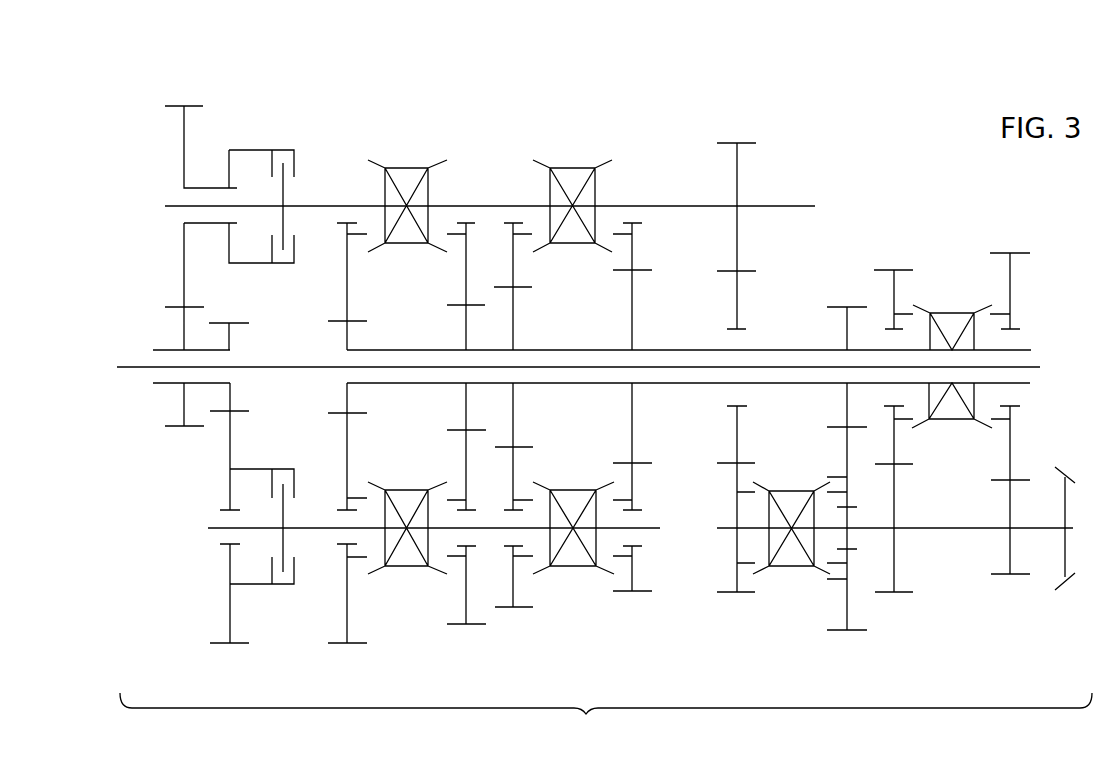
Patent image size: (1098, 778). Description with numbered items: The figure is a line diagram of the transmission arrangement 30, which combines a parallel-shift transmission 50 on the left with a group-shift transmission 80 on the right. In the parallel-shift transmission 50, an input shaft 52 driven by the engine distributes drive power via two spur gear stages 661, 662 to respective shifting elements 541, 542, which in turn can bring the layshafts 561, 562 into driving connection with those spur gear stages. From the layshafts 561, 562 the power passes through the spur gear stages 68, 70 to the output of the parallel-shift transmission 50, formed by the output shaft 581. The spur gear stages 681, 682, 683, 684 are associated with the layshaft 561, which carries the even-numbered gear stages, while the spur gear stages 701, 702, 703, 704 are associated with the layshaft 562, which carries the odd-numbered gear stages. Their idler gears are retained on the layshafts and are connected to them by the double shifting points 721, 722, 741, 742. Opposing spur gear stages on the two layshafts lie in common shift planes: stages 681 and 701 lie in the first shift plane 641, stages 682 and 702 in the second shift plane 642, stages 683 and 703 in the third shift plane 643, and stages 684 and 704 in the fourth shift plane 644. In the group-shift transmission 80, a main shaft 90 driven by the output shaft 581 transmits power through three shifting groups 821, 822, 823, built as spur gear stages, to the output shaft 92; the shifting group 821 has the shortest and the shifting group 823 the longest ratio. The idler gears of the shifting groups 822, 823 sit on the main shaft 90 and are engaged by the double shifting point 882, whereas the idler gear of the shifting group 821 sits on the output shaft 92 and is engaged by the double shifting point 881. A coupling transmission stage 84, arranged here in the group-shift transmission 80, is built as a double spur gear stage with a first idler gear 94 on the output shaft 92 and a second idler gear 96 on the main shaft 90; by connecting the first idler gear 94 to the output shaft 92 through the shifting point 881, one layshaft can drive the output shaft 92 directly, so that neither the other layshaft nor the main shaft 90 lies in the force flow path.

The transmission arrangement 30 is at (606, 720).
The parallel-shift transmission 50 is at (405, 57).
The input shaft 52 is at (153, 350).
The shifting element 541 is at (252, 150).
The shifting element 542 is at (275, 584).
The layshaft 561 is at (653, 206).
The layshaft 562 is at (660, 528).
The output shaft 581 is at (395, 383).
The shift plane 641 is at (348, 662).
The shift plane 642 is at (467, 662).
The shift plane 643 is at (515, 662).
The shift plane 644 is at (633, 662).
The spur gear stage 661 is at (177, 298).
The spur gear stage 662 is at (225, 418).
The spur gear stage 68 is at (158, 171).
The spur gear stage 681 is at (340, 318).
The spur gear stage 682 is at (462, 300).
The spur gear stage 683 is at (521, 290).
The spur gear stage 684 is at (644, 272).
The spur gear stage 70 is at (168, 597).
The spur gear stage 701 is at (340, 418).
The spur gear stage 702 is at (462, 428).
The spur gear stage 703 is at (519, 440).
The spur gear stage 704 is at (628, 460).
The double shifting point 721 is at (405, 168).
The double shifting point 722 is at (567, 168).
The double shifting point 741 is at (395, 566).
The double shifting point 742 is at (566, 566).
The group-shift transmission 80 is at (968, 60).
The shifting group 821 is at (842, 422).
The shifting group 822 is at (906, 458).
The shifting group 823 is at (1023, 460).
The coupling transmission stage 84 is at (870, 195).
The double shifting point 881 is at (800, 566).
The double shifting point 882 is at (940, 313).
The main shaft 90 is at (658, 350).
The output shaft 92 is at (952, 528).
The first idler gear 94 is at (737, 445).
The second idler gear 96 is at (737, 475).